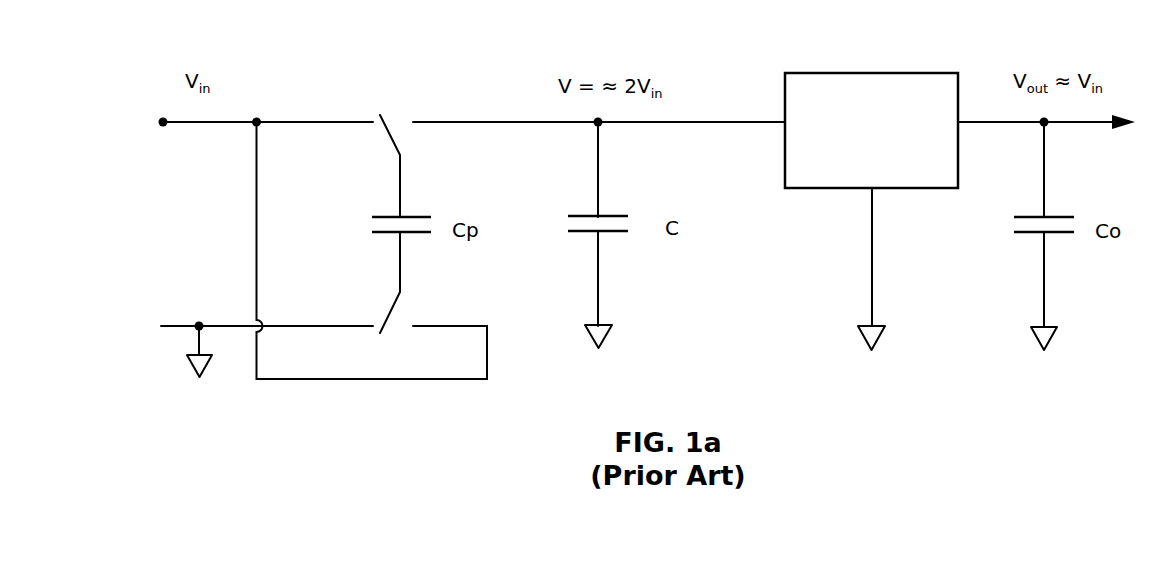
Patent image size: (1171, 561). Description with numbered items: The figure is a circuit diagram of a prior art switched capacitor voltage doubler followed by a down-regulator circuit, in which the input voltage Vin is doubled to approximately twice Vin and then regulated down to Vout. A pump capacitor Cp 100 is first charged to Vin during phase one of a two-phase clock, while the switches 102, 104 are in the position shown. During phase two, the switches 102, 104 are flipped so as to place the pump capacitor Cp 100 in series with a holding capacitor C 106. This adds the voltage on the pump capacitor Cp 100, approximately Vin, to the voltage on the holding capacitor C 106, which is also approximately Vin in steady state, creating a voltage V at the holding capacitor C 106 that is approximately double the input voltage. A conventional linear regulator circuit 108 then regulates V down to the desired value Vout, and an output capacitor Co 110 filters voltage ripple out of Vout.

The pump capacitor Cp 100 is at (412, 217).
The switch 102 is at (395, 150).
The switch 104 is at (392, 305).
The holding capacitor C 106 is at (612, 215).
The linear regulator circuit 108 is at (912, 72).
The output capacitor Co 110 is at (1067, 215).